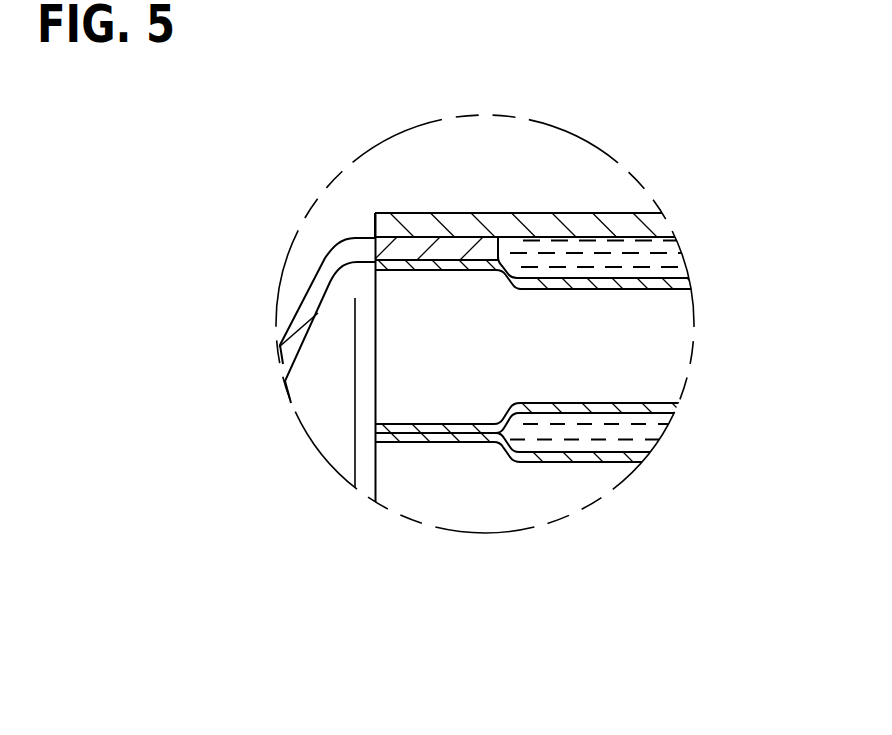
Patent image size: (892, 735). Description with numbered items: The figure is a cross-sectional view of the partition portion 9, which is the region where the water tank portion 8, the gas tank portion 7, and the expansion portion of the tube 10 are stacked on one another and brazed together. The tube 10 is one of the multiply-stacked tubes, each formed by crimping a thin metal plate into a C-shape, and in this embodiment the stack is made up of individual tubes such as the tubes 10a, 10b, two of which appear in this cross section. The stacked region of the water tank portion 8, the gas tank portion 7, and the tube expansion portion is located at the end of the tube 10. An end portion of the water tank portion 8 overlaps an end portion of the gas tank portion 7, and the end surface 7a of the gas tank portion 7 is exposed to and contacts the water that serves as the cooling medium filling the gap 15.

The gas tank portion 7 is at (308, 303).
The end surface of the gas tank portion 7a is at (502, 257).
The water tank portion 8 is at (578, 222).
The partition portion 9 is at (417, 212).
The tube 10 is at (663, 285).
The tube 10a is at (633, 280).
The tube 10b is at (623, 457).
The gap 15 is at (668, 257).